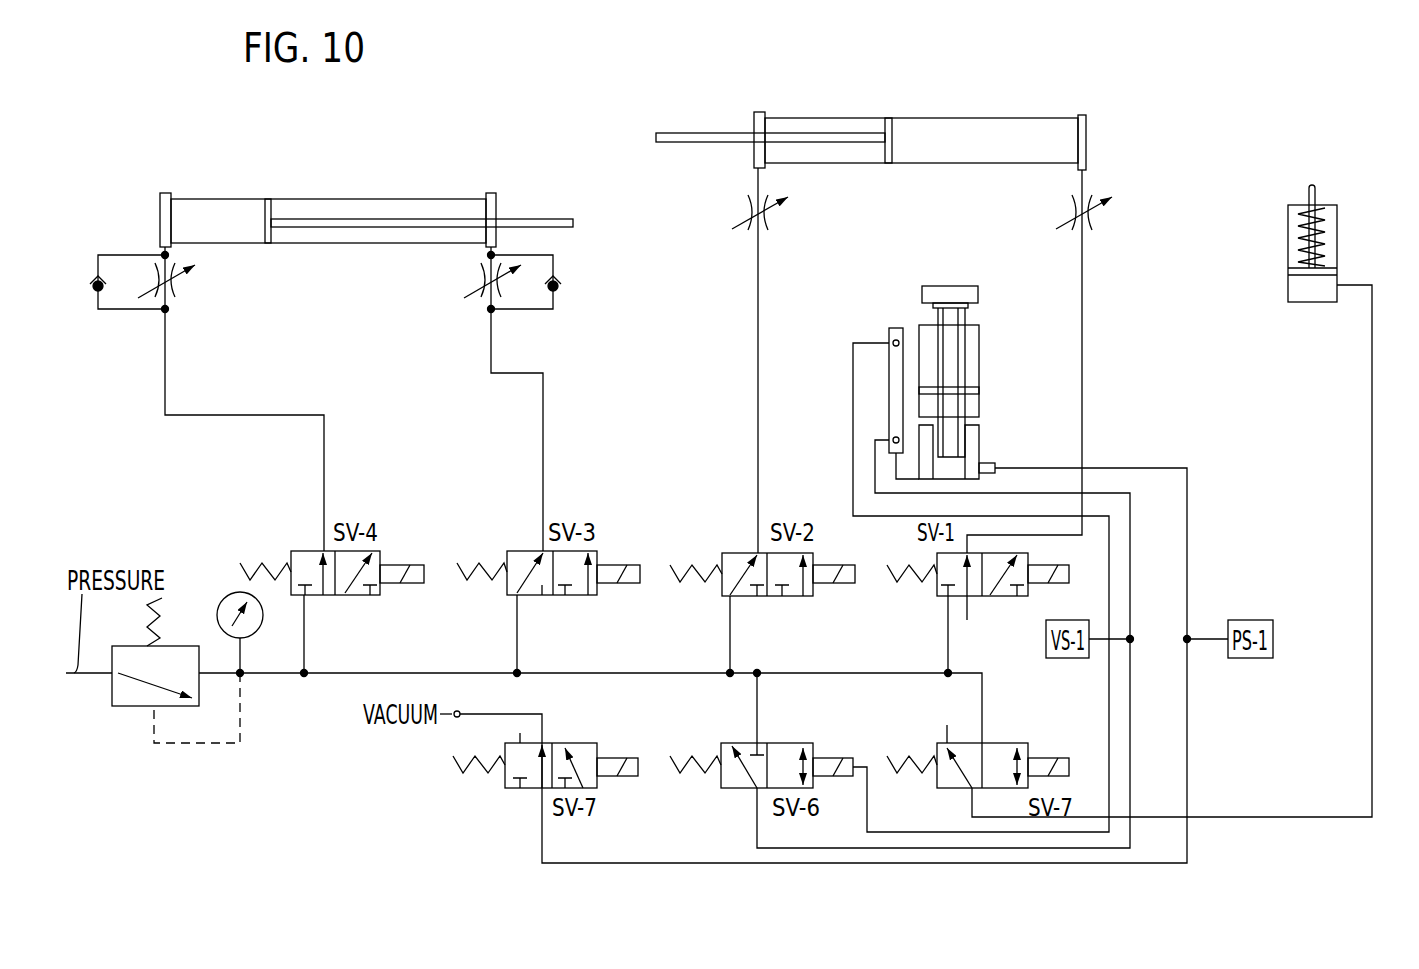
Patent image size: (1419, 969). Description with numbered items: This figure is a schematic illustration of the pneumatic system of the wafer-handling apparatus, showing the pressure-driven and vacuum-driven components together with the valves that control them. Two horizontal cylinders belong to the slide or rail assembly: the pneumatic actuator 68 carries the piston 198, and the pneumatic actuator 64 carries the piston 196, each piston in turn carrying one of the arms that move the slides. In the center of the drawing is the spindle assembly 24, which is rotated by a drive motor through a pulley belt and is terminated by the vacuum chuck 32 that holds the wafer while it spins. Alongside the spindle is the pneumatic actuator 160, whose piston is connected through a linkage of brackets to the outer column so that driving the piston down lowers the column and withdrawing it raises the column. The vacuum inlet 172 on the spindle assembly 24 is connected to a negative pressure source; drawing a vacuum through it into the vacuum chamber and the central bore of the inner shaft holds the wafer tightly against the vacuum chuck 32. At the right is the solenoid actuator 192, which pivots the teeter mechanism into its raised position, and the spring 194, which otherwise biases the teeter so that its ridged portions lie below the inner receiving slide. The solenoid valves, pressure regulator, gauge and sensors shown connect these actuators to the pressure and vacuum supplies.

The spindle assembly 24 is at (991, 385).
The vacuum chuck 32 is at (980, 297).
The pneumatic actuator 64 is at (966, 117).
The pneumatic actuator 68 is at (335, 245).
The pneumatic actuator 160 is at (889, 401).
The vacuum inlet 172 is at (990, 461).
The solenoid actuator 192 is at (1288, 290).
The spring 194 is at (1300, 239).
The piston 196 is at (697, 132).
The piston 198 is at (537, 217).